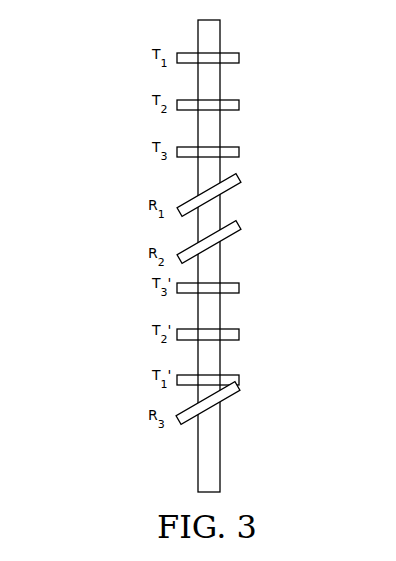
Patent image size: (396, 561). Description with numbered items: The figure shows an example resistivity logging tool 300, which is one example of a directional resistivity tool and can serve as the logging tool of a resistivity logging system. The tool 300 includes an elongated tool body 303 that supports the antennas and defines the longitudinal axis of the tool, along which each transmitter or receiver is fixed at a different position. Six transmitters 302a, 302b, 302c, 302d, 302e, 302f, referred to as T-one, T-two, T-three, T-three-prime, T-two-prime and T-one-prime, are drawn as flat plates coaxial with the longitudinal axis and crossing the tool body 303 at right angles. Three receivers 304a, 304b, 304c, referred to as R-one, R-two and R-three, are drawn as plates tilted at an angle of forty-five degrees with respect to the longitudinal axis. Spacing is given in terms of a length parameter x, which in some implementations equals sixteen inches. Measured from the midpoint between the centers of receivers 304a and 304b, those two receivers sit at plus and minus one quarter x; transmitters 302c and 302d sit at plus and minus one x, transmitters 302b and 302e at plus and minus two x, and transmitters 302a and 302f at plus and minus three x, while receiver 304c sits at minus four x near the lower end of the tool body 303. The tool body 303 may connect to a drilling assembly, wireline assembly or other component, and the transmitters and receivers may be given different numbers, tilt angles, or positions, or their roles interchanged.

The resistivity logging tool 300 is at (107, 158).
The transmitter 302a is at (240, 58).
The transmitter 302b is at (240, 105).
The transmitter 302c is at (240, 152).
The transmitter 302d is at (240, 288).
The transmitter 302e is at (240, 334).
The transmitter 302f is at (240, 380).
The receiver 304a is at (238, 180).
The receiver 304b is at (238, 226).
The receiver 304c is at (228, 398).
The tool body 303 is at (197, 453).